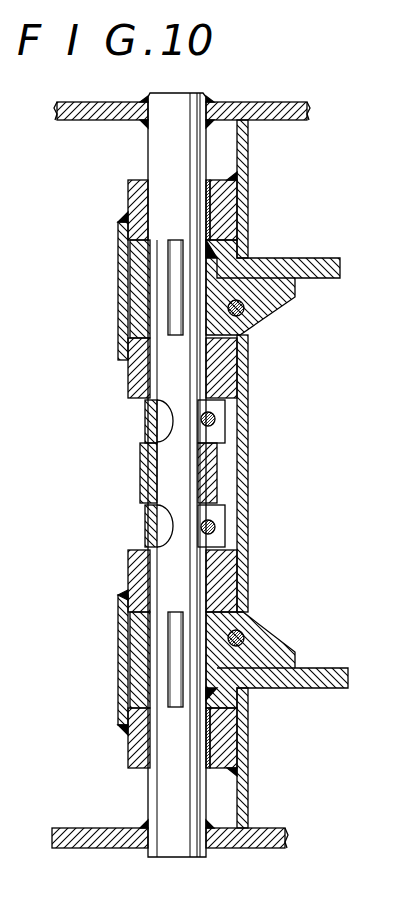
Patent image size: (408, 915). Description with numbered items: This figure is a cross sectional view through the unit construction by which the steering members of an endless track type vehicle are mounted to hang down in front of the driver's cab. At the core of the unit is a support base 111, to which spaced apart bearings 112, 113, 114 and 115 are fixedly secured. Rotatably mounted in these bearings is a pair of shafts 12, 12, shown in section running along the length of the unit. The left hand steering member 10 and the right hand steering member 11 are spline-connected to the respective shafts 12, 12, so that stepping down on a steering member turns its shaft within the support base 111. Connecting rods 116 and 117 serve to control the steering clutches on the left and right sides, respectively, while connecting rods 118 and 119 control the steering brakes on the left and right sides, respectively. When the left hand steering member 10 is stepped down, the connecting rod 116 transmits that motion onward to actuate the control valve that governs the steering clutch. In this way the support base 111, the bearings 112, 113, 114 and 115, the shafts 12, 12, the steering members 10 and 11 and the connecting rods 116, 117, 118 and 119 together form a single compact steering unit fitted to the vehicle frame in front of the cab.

The left hand steering member 10 is at (312, 678).
The right hand steering member 11 is at (308, 268).
The shaft 12 is at (193, 110).
The support base 111 is at (248, 446).
The bearing 112 is at (130, 746).
The bearing 113 is at (135, 552).
The bearing 114 is at (135, 390).
The bearing 115 is at (135, 200).
The connecting rod 116 is at (78, 838).
The connecting rod 117 is at (80, 112).
The connecting rod 118 is at (268, 838).
The connecting rod 119 is at (302, 112).